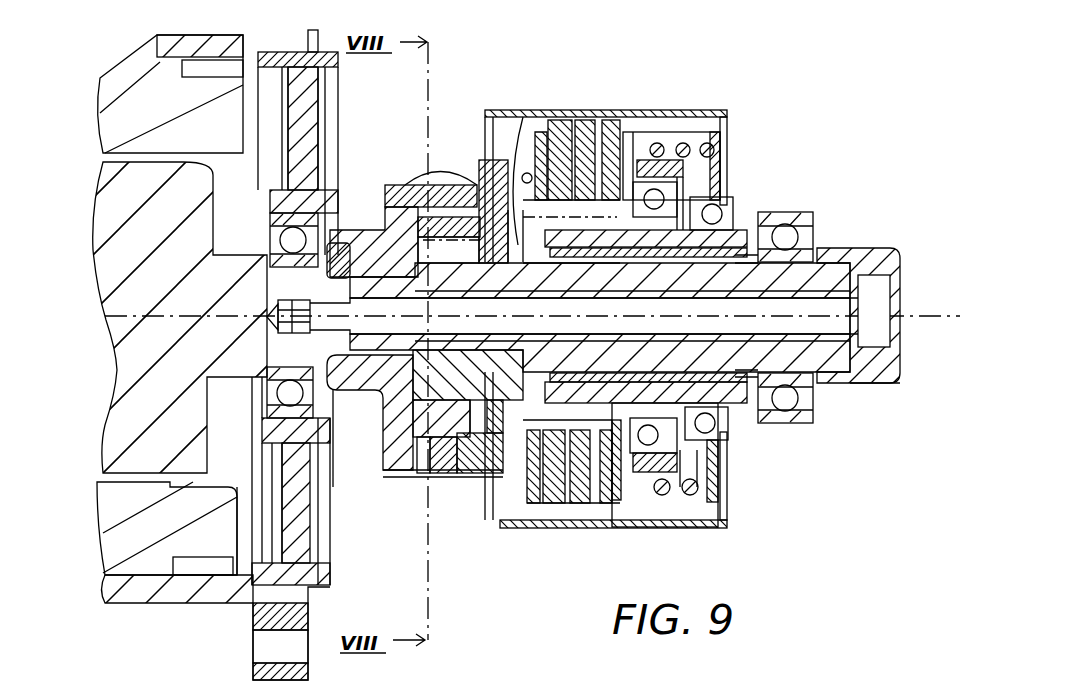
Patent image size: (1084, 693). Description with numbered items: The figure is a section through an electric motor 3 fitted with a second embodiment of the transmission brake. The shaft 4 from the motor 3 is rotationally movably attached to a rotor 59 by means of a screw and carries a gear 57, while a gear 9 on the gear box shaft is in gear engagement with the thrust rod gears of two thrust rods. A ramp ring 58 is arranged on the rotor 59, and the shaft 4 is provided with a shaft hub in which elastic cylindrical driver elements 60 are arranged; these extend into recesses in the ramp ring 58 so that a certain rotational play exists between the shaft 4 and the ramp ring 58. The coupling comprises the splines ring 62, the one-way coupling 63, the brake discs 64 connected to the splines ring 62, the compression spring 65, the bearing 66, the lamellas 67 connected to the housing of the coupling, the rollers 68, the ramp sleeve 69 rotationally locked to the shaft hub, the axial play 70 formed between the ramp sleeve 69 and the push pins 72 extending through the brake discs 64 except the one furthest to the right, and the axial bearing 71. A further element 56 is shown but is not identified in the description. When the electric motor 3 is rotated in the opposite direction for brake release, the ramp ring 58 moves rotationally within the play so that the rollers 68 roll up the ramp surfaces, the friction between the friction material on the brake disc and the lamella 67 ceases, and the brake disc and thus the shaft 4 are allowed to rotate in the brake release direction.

The motor 3 is at (133, 87).
The gear 9 is at (118, 195).
The shaft 4 is at (822, 275).
The bearing 56 is at (330, 215).
The gear 57 is at (878, 386).
The ramp ring 58 is at (370, 450).
The rotor 59 is at (390, 290).
The cylindrical driver elements 60 is at (418, 185).
The splines ring 62 is at (700, 432).
The one-way coupling 63 is at (697, 257).
The brake discs 64 is at (598, 500).
The compression spring 65 is at (690, 145).
The bearing 66 is at (655, 490).
The lamellas 67 is at (556, 500).
The rollers 68 is at (441, 198).
The ramp sleeve 69 is at (548, 255).
The axial play 70 is at (522, 248).
The axial bearing 71 is at (866, 268).
The push pins 72 is at (590, 213).